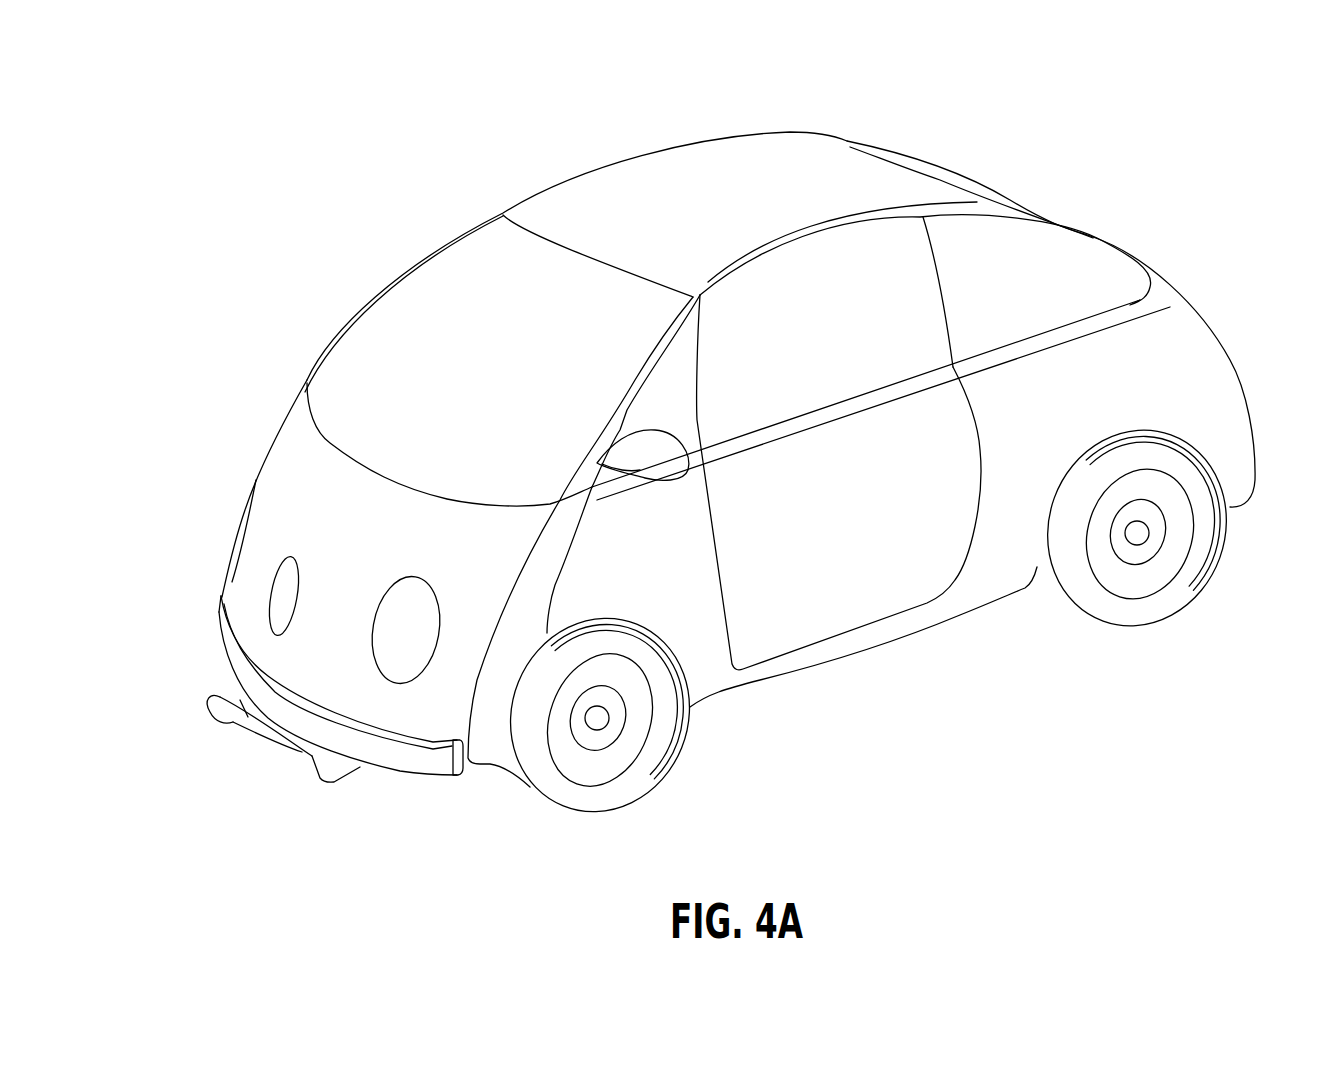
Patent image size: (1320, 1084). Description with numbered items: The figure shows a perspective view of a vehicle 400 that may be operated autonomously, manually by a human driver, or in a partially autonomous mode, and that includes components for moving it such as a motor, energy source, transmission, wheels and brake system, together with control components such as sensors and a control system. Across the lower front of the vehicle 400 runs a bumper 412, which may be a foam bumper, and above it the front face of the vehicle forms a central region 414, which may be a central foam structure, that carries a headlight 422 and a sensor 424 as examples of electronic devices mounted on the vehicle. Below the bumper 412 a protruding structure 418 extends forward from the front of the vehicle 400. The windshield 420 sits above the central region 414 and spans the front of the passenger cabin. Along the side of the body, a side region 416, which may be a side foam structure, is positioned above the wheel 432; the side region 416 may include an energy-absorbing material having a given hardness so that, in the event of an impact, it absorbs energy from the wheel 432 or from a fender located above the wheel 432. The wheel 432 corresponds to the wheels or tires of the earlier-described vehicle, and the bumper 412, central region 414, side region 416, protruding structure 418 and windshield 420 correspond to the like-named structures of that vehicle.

The vehicle 400 is at (699, 469).
The bumper 412 is at (222, 647).
The central region 414 is at (395, 537).
The side region 416 is at (498, 690).
The protruding structure 418 is at (215, 724).
The windshield 420 is at (504, 374).
The headlight 422 is at (374, 665).
The sensor 424 is at (296, 558).
The wheel 432 is at (668, 765).